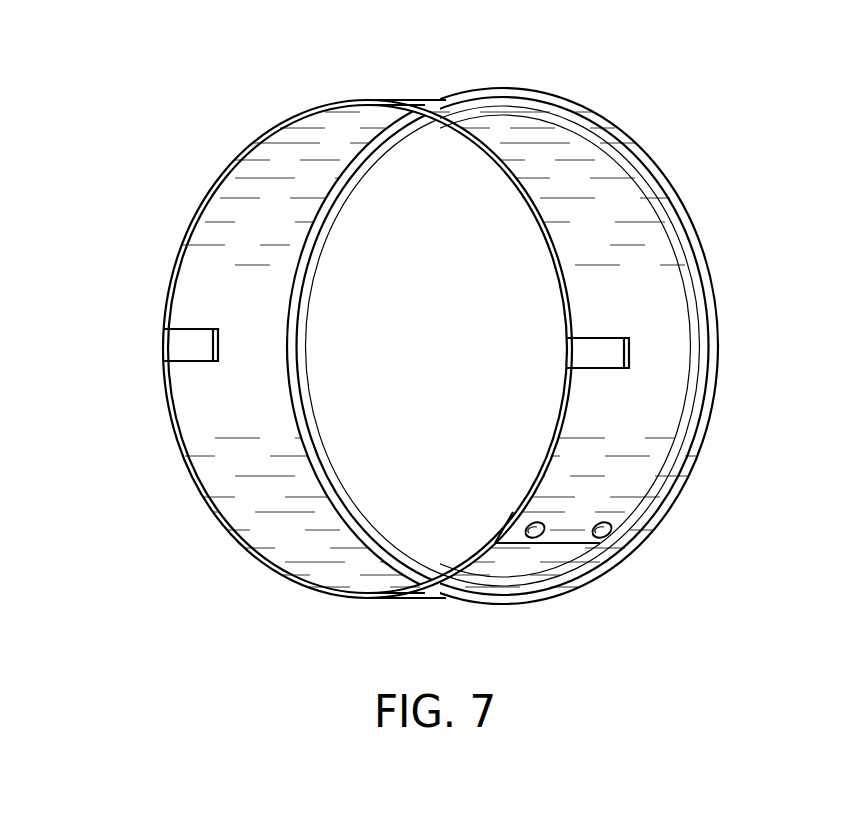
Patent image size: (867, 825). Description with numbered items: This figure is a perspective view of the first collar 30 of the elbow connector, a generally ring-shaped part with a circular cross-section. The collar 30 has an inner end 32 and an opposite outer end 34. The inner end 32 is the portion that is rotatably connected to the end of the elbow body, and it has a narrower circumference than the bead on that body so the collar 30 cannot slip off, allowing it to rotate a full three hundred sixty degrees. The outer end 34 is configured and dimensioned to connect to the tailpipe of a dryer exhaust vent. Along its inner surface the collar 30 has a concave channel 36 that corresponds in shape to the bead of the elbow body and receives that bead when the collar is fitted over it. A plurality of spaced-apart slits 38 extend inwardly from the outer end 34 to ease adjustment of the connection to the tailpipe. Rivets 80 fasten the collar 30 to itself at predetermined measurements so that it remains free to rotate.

The first collar 30 is at (245, 522).
The inner end 32 is at (307, 373).
The outer end 34 is at (167, 291).
The concave channel 36 is at (297, 427).
The slits 38 is at (365, 100).
The rivets 80 is at (538, 540).